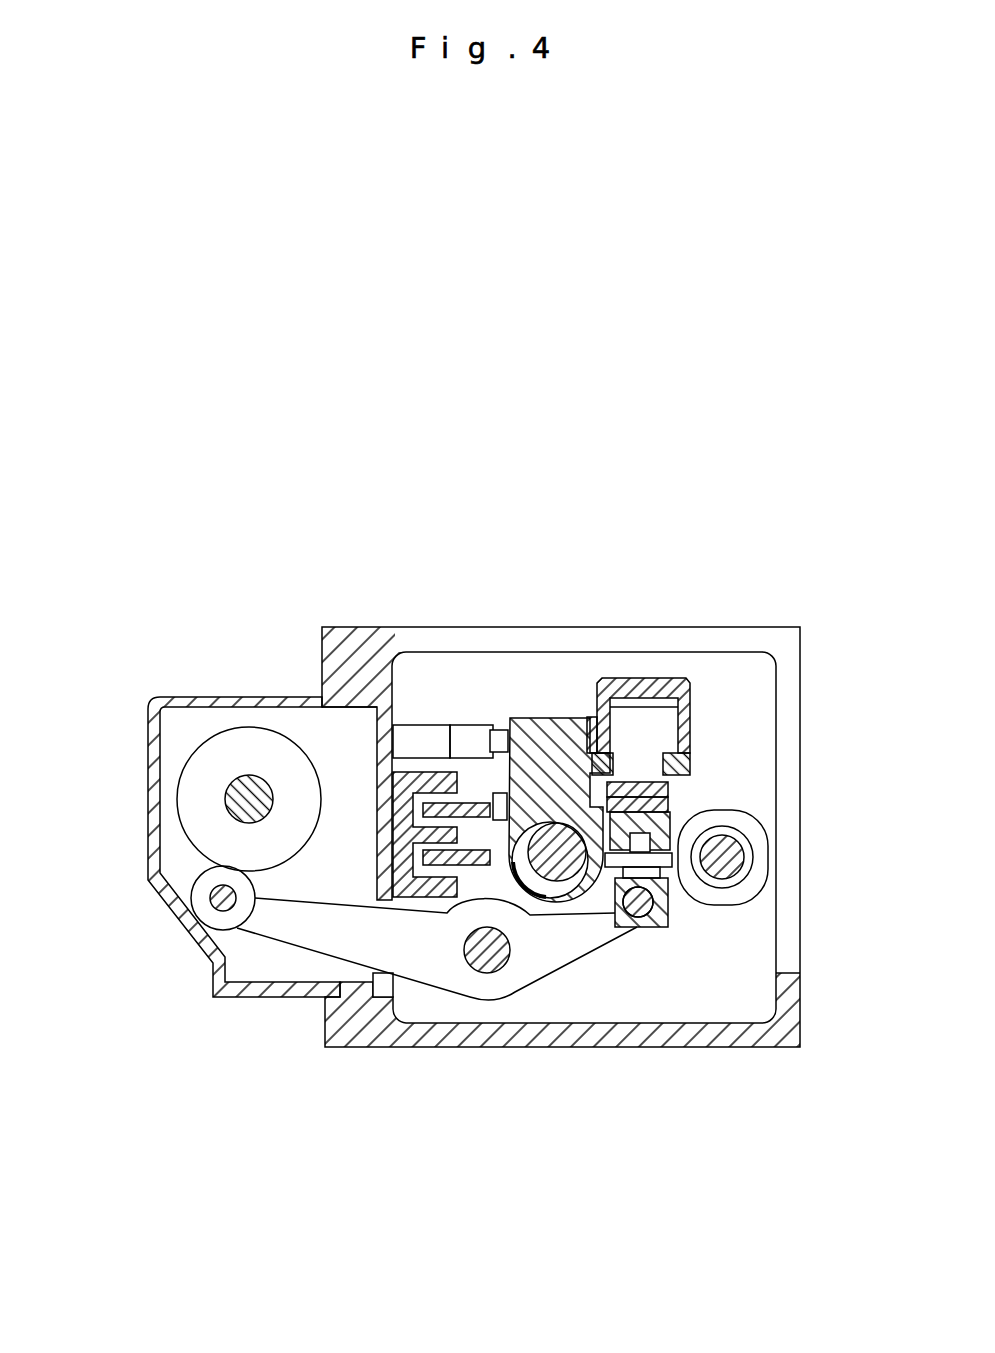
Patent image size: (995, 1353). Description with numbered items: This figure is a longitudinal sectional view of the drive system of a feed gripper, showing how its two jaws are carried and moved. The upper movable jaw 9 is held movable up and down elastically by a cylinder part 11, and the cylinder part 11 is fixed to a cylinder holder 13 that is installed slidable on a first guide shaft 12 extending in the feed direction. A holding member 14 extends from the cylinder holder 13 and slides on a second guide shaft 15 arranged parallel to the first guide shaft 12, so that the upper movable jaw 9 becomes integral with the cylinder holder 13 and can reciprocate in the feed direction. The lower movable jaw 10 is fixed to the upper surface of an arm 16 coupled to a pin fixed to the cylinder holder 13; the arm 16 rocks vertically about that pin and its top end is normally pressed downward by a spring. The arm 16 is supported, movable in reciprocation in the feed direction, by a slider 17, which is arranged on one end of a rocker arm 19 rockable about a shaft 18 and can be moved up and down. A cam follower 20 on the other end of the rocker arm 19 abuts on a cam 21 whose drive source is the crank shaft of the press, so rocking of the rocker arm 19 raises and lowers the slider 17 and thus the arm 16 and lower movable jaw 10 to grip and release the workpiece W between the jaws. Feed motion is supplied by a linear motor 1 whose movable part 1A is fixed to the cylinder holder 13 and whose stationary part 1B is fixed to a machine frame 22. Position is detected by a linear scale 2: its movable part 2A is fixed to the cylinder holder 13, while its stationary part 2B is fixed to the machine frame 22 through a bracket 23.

The linear motor 1 is at (425, 1133).
The movable part 1A is at (477, 865).
The stationary part 1B is at (376, 905).
The linear scale 2 is at (385, 483).
The movable part 2A is at (497, 727).
The stationary part 2B is at (467, 723).
The upper movable jaw 9 is at (645, 780).
The lower movable jaw 10 is at (668, 797).
The cylinder part 11 is at (673, 683).
The first guide shaft 12 is at (552, 823).
The cylinder holder 13 is at (527, 720).
The holding member 14 is at (748, 900).
The second guide shaft 15 is at (745, 864).
The arm 16 is at (668, 803).
The slider 17 is at (658, 927).
The shaft 18 is at (487, 973).
The rocker arm 19 is at (507, 994).
The cam follower 20 is at (212, 893).
The cam 21 is at (213, 733).
The machine frame 22 is at (373, 763).
The bracket 23 is at (420, 722).
The workpiece W is at (668, 793).